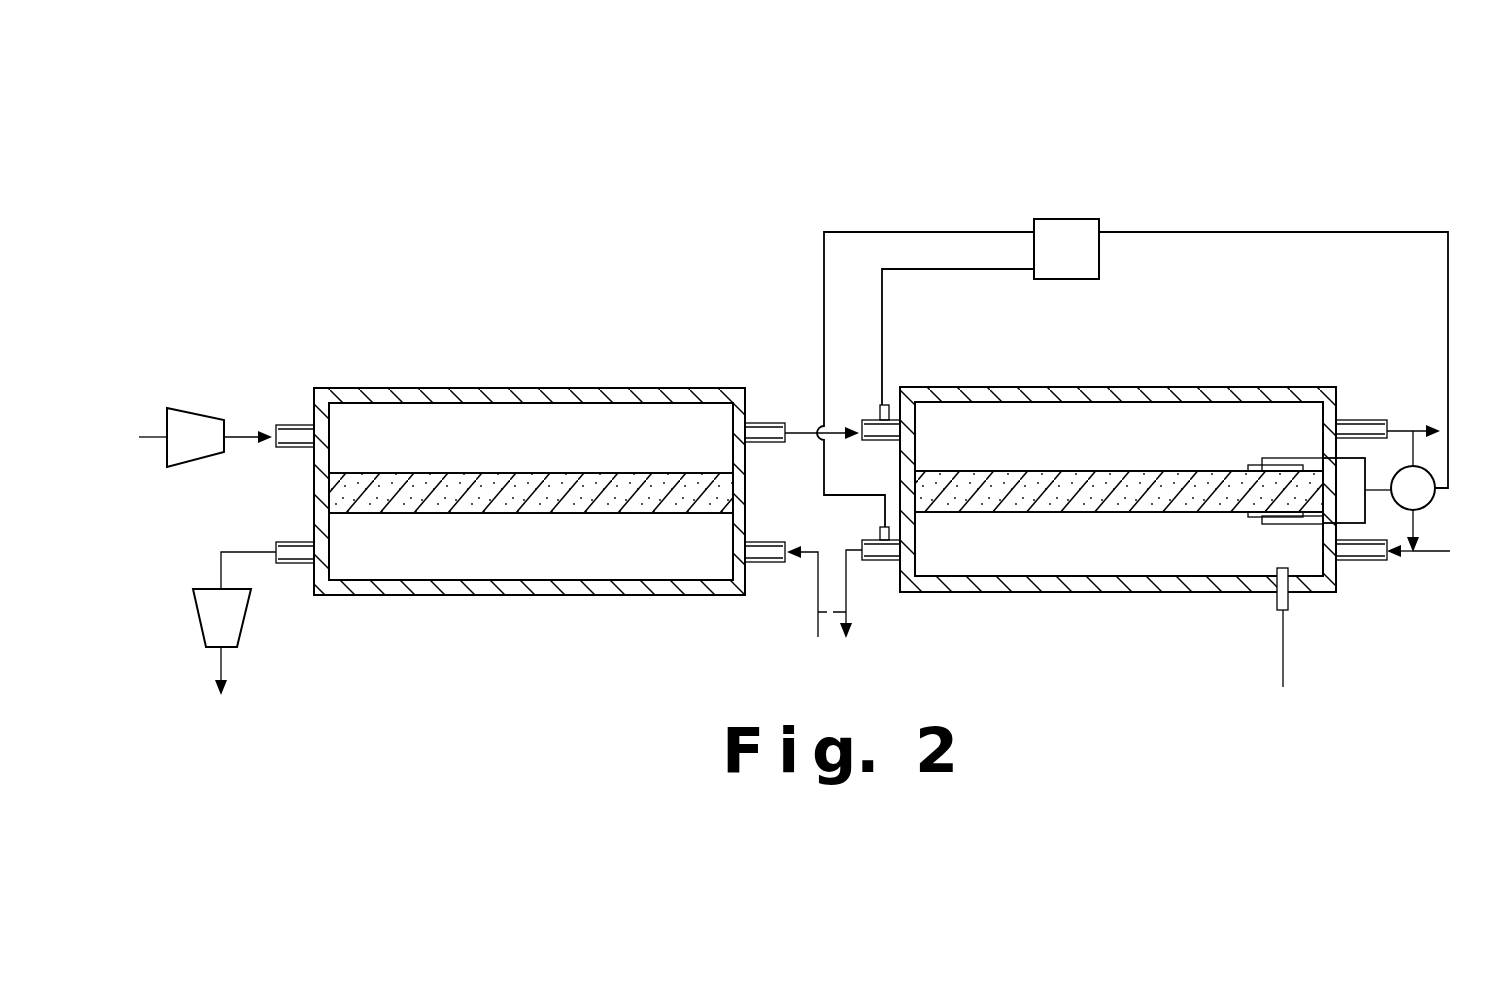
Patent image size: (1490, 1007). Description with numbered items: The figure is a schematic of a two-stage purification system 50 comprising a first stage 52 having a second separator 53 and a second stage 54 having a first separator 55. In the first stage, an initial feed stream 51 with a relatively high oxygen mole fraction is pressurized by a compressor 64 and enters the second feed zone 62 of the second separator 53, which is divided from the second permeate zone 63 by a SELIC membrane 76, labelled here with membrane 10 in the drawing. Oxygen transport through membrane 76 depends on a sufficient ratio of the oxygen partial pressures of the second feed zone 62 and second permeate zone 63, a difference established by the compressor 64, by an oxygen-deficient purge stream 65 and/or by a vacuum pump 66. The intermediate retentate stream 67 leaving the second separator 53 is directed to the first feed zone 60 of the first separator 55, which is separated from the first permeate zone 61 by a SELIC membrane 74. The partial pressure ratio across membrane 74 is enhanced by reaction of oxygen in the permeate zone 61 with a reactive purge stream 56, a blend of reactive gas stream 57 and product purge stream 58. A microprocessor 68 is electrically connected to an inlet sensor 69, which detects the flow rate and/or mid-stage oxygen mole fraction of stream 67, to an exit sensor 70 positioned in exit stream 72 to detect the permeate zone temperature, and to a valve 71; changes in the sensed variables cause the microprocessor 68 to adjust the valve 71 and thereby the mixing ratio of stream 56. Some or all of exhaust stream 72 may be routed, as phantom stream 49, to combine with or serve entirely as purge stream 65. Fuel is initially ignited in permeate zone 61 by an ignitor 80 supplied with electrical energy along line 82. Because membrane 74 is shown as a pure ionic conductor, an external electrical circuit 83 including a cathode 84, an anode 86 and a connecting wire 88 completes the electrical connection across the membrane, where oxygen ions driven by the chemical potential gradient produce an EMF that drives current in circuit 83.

The membrane 10 is at (745, 506).
The stream 49 is at (830, 615).
The purification system 50 is at (1150, 182).
The initial feed stream 51 is at (152, 437).
The first stage 52 is at (460, 362).
The second separator 53 is at (668, 368).
The second stage 54 is at (1187, 222).
The first separator 55 is at (1250, 375).
The reactive purge stream 56 is at (1412, 555).
The reactive gas stream 57 is at (1430, 555).
The product purge stream 58 is at (1418, 524).
The first feed zone 60 is at (1103, 413).
The first permeate zone 61 is at (1083, 567).
The second feed zone 62 is at (585, 425).
The second permeate zone 63 is at (560, 560).
The compressor 64 is at (193, 445).
The oxygen-deficient purge stream 65 is at (818, 573).
The vacuum pump 66 is at (207, 620).
The intermediate retentate stream 67 is at (802, 432).
The microprocessor 68 is at (1075, 219).
The inlet sensor 69 is at (889, 392).
The exit sensor 70 is at (880, 533).
The valve 71 is at (1436, 498).
The exit stream 72 is at (848, 577).
The SELIC membrane 74 is at (972, 471).
The SELIC membrane 76 is at (668, 472).
The ignitor 80 is at (1275, 597).
The line 82 is at (1280, 640).
The external electrical circuit 83 is at (1272, 446).
The cathode 84 is at (1260, 465).
The anode 86 is at (1257, 520).
The connecting wire 88 is at (1365, 482).